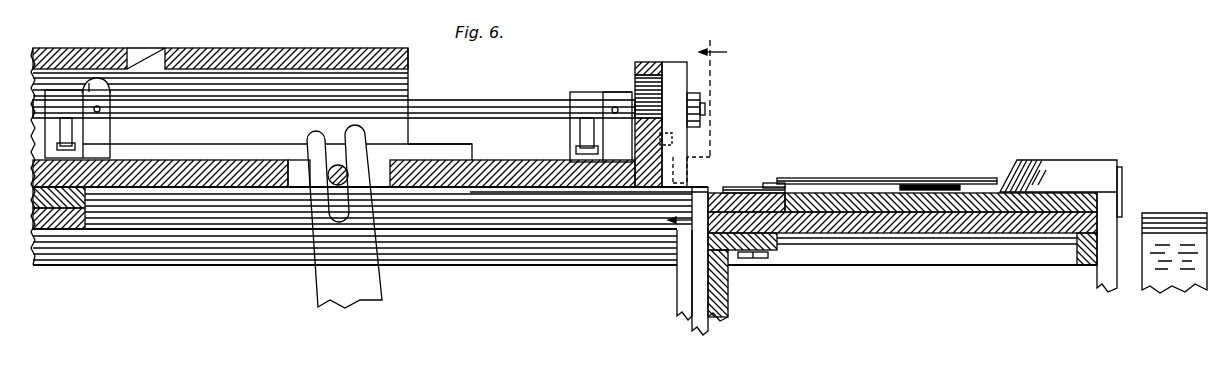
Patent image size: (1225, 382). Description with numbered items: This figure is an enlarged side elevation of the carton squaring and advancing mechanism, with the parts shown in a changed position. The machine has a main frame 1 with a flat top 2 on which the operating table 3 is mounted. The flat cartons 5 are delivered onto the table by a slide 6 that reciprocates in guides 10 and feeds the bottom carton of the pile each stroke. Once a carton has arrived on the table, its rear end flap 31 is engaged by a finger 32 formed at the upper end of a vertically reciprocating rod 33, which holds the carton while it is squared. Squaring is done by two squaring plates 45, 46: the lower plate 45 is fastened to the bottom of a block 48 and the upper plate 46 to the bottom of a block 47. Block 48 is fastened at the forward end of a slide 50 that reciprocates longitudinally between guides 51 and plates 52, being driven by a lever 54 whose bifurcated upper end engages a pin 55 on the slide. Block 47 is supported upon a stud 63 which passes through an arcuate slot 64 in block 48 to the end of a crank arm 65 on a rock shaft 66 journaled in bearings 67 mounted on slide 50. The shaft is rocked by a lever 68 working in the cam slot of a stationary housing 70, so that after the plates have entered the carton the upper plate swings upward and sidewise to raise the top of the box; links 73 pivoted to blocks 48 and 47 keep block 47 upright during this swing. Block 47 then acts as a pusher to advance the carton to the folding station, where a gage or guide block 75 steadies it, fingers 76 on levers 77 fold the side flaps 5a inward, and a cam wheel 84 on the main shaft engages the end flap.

The main frame 1 is at (680, 298).
The flat top 2 is at (1025, 222).
The operating table 3 is at (983, 198).
The flat carton 5 is at (878, 178).
The side flaps 5a is at (955, 192).
The slide 6 is at (845, 197).
The guides 10 is at (703, 131).
The rear end flap 31 is at (742, 187).
The finger 32 is at (700, 198).
The vertically reciprocating rod 33 is at (700, 322).
The lower squaring plate 45 is at (765, 185).
The upper squaring plate 46 is at (787, 189).
The block 47 is at (676, 64).
The block 48 is at (651, 62).
The slide 50 is at (530, 166).
The guides 51 is at (70, 197).
The plates 52 is at (462, 141).
The lever 54 is at (360, 291).
The pin 55 is at (322, 157).
The stud 63 is at (706, 110).
The arcuate slot 64 is at (636, 80).
The crank arm 65 is at (604, 92).
The rock shaft 66 is at (444, 110).
The bearings 67 is at (85, 137).
The lever 68 is at (95, 80).
The stationary housing 70 is at (263, 48).
The links 73 is at (690, 128).
The gage or guide block 75 is at (1068, 170).
The fingers 76 is at (1122, 178).
The levers 77 is at (1105, 278).
The cam wheel 84 is at (1172, 225).